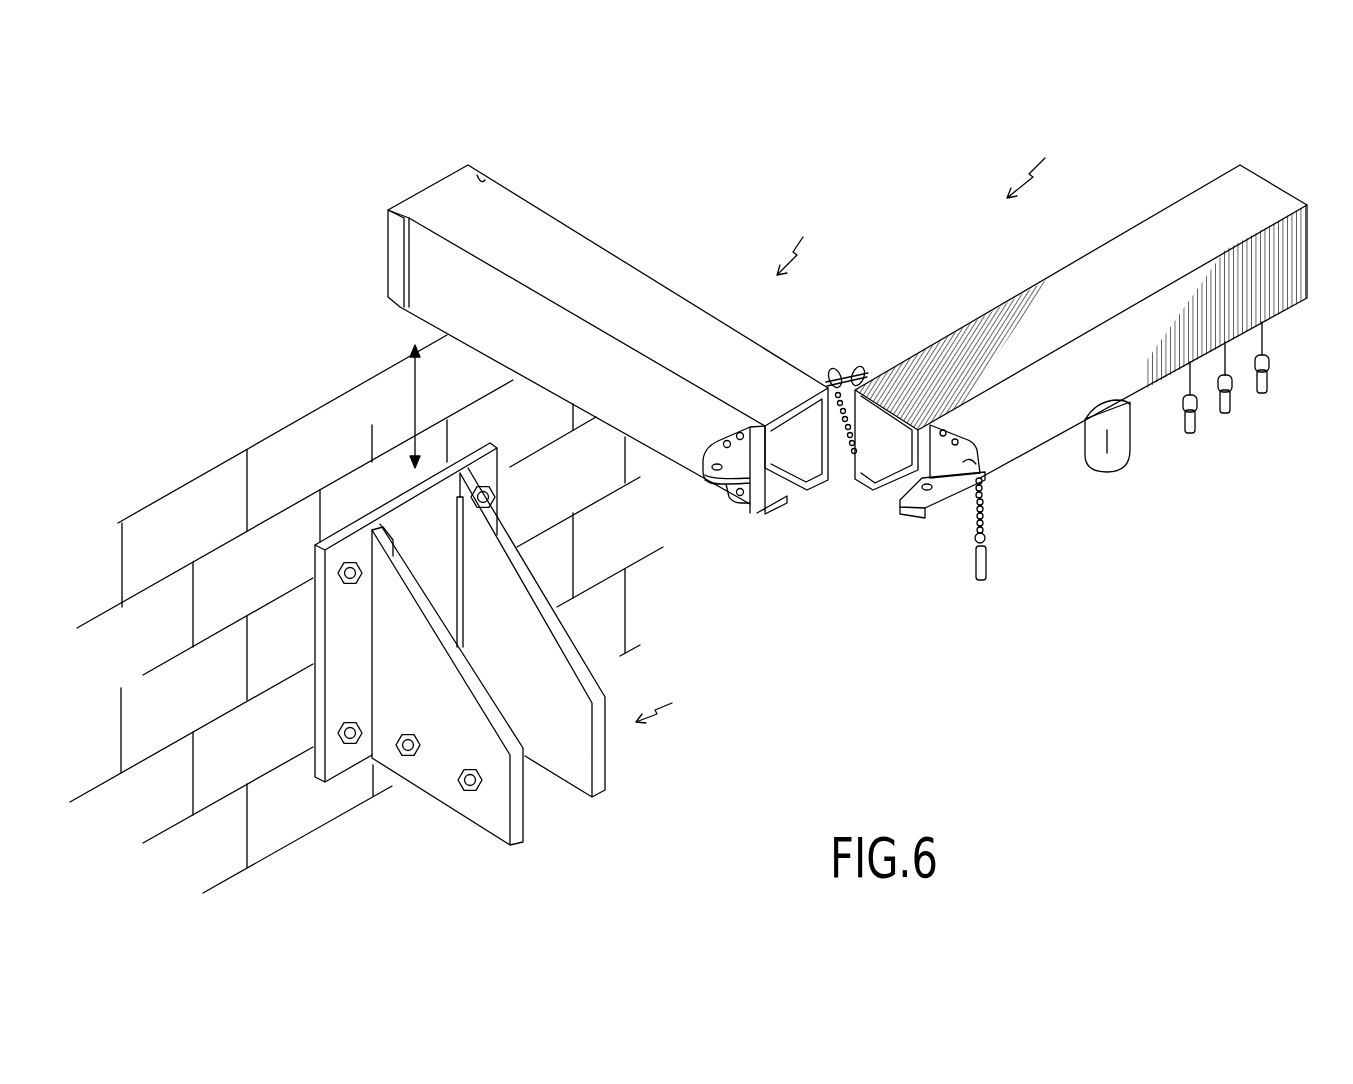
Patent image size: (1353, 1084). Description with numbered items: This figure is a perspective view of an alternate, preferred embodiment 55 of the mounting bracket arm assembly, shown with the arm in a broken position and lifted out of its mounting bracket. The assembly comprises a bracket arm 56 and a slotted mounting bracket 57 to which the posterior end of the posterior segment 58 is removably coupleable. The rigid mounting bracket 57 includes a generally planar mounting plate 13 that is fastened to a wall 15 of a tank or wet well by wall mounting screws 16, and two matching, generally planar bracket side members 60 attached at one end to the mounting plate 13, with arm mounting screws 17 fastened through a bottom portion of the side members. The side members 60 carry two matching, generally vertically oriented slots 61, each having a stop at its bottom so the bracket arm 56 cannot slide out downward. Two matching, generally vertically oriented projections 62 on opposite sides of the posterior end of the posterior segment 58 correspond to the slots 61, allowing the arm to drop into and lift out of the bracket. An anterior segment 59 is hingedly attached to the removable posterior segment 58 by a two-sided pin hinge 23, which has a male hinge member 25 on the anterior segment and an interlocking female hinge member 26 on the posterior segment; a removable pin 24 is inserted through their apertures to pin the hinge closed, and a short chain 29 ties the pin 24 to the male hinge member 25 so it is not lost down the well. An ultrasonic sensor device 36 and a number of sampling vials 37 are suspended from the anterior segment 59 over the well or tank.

The mounting plate 13 is at (343, 637).
The wall 15 is at (206, 544).
The wall mounting screws 16 is at (350, 561).
The arm mounting screws 17 is at (407, 757).
The two-sided pin hinge 23 is at (857, 346).
The removable pin 24 is at (987, 563).
The male hinge member 25 is at (943, 478).
The female hinge member 26 is at (725, 480).
The chain 29 is at (984, 508).
The ultrasonic sensor device 36 is at (1113, 453).
The sampling vials 37 is at (1197, 435).
The alternate preferred embodiment of the mounting bracket arm assembly 55 is at (1044, 157).
The bracket arm 56 is at (813, 235).
The slotted mounting bracket 57 is at (683, 715).
The posterior segment 58 is at (560, 293).
The anterior segment 59 is at (1126, 287).
The bracket side members 60 is at (403, 709).
The slots 61 is at (393, 540).
The projections 62 is at (485, 180).